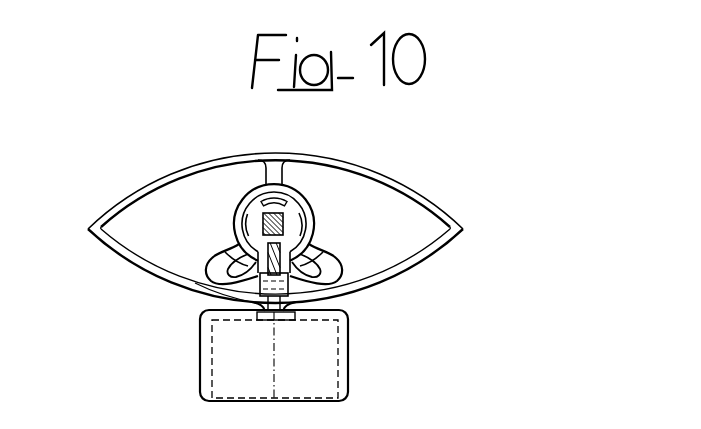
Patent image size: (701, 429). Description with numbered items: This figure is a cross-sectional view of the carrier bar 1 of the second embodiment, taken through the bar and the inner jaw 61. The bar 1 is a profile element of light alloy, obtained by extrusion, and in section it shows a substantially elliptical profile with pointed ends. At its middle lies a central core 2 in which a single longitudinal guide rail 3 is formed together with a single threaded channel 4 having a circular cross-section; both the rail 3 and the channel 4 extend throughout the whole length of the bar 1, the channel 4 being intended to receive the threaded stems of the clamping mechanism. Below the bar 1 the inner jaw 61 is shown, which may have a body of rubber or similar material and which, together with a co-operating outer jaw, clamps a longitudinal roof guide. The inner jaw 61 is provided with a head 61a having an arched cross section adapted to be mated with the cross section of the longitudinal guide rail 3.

The bar 1 is at (144, 173).
The central core 2 is at (323, 207).
The longitudinal guide rail 3 is at (322, 275).
The threaded channel 4 is at (243, 226).
The inner jaw 61 is at (323, 358).
The head 61a is at (237, 291).